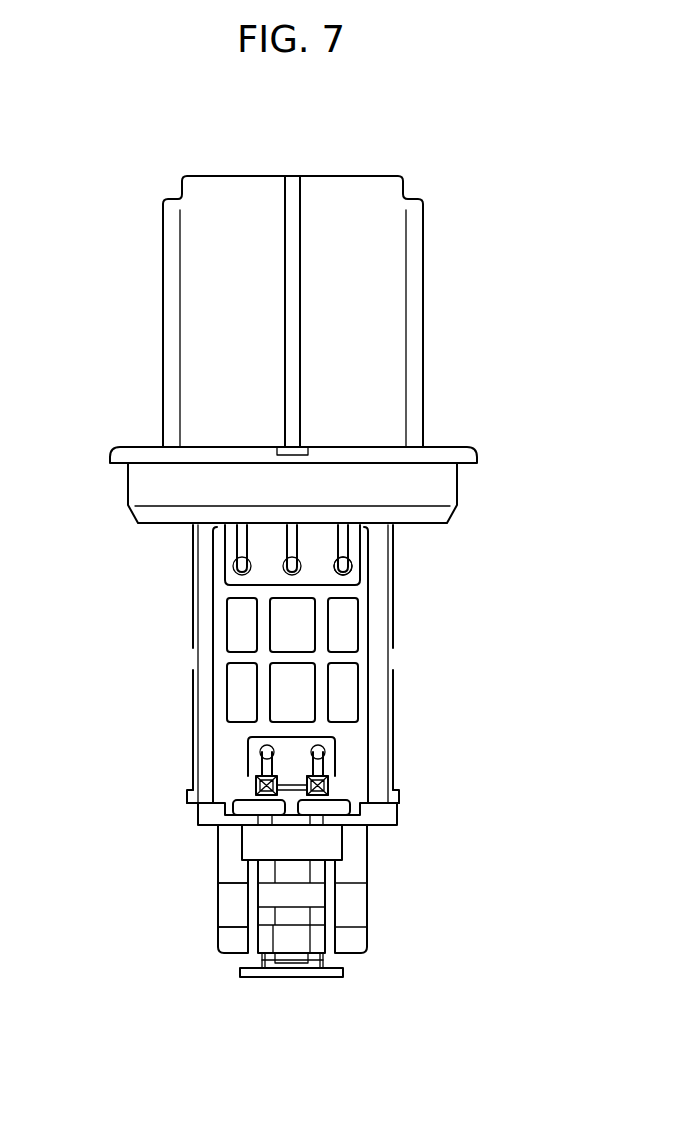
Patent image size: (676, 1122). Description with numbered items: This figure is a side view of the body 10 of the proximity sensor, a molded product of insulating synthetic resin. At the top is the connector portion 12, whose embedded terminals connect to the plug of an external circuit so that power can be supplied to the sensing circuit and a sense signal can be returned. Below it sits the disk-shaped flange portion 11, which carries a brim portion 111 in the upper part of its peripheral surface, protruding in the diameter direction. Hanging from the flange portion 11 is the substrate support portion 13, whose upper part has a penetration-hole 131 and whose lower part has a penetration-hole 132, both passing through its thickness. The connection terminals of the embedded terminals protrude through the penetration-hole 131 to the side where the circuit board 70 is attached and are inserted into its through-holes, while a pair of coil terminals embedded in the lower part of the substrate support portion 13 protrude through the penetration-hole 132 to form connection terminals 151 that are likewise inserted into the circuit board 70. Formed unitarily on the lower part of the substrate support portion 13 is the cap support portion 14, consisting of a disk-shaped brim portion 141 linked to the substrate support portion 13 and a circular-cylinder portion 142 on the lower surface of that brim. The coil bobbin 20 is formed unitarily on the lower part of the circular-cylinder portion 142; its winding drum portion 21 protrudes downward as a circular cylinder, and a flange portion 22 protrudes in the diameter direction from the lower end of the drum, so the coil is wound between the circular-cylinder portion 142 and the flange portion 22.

The body 10 is at (117, 220).
The connector portion 12 is at (417, 222).
The brim portion 111 is at (468, 450).
The flange portion 11 is at (452, 487).
The penetration-hole 131 is at (362, 538).
The substrate support portion 13 is at (353, 673).
The circuit board 70 is at (393, 697).
The penetration-hole 132 is at (323, 750).
The connection terminal 151 is at (312, 758).
The brim portion 141 is at (378, 817).
The cap support portion 14 is at (362, 935).
The circular-cylinder portion 142 is at (222, 940).
The coil bobbin 20 is at (293, 1034).
The flange portion 22 is at (243, 972).
The winding drum portion 21 is at (268, 963).